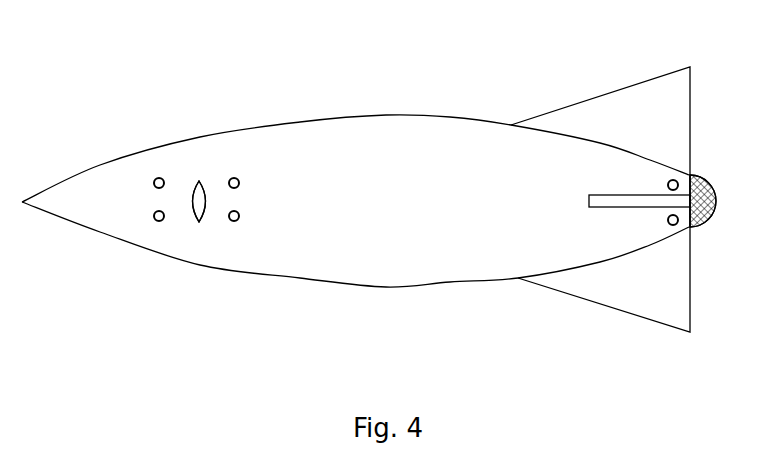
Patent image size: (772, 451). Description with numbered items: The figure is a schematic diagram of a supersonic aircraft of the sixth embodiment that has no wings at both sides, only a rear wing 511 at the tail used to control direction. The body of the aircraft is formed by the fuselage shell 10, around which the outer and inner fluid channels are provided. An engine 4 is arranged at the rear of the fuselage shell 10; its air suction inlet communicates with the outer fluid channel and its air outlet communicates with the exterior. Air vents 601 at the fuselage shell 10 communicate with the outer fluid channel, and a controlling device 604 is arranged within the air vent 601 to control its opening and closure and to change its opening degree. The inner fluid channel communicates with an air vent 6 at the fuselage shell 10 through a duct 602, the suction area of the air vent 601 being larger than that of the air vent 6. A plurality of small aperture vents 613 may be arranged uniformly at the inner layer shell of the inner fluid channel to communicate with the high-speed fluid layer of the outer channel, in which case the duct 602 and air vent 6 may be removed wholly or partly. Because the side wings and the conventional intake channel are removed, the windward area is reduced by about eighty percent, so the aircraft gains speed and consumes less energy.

The fuselage shell 10 is at (355, 150).
The rear wing 511 is at (600, 174).
The engine 4 is at (663, 175).
The air vent 6 is at (180, 117).
The air vent 601 is at (228, 118).
The controlling device 604 is at (278, 117).
The small aperture vent 613 is at (158, 251).
The duct 602 is at (596, 259).